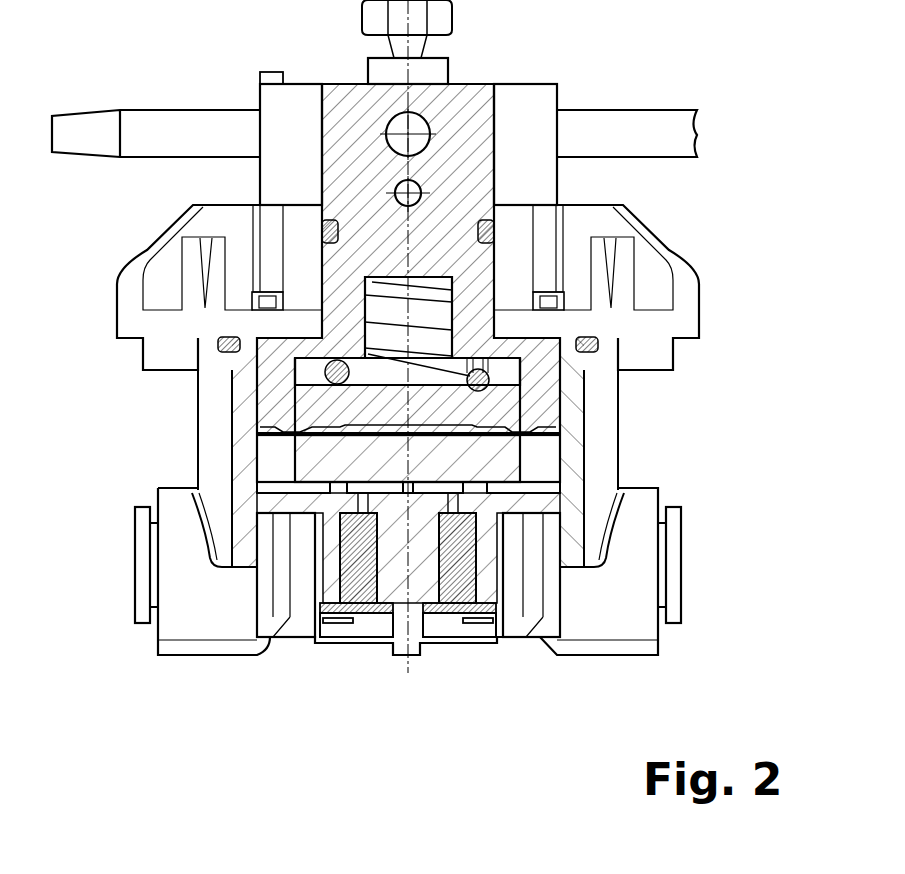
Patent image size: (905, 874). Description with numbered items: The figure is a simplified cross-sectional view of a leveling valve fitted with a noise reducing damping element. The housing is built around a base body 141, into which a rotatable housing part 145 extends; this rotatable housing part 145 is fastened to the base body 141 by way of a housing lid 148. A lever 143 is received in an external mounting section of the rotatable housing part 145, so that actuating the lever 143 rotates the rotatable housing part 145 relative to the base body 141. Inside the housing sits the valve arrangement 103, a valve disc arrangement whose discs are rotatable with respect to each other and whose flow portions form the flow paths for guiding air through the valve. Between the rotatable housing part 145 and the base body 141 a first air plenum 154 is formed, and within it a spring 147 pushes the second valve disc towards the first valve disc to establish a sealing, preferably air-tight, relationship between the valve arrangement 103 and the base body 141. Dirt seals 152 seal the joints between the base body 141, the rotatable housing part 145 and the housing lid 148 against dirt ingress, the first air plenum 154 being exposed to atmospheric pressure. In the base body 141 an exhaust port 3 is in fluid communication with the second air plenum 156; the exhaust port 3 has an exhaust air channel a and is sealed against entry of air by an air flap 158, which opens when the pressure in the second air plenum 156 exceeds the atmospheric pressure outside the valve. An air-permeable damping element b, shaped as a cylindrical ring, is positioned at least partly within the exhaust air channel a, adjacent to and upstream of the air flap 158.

The rotatable housing part 145 is at (300, 93).
The dirt seal 152 is at (484, 218).
The lever 143 is at (628, 120).
The first air plenum 154 is at (384, 305).
The spring 147 is at (327, 372).
The exhaust port 3 is at (352, 503).
The base body 141 is at (245, 538).
The valve arrangement 103 is at (480, 420).
The second air plenum 156 is at (540, 456).
The exhaust air channel a is at (458, 503).
The damping element b is at (357, 583).
The air flap 158 is at (478, 622).
The housing lid 148 is at (610, 623).